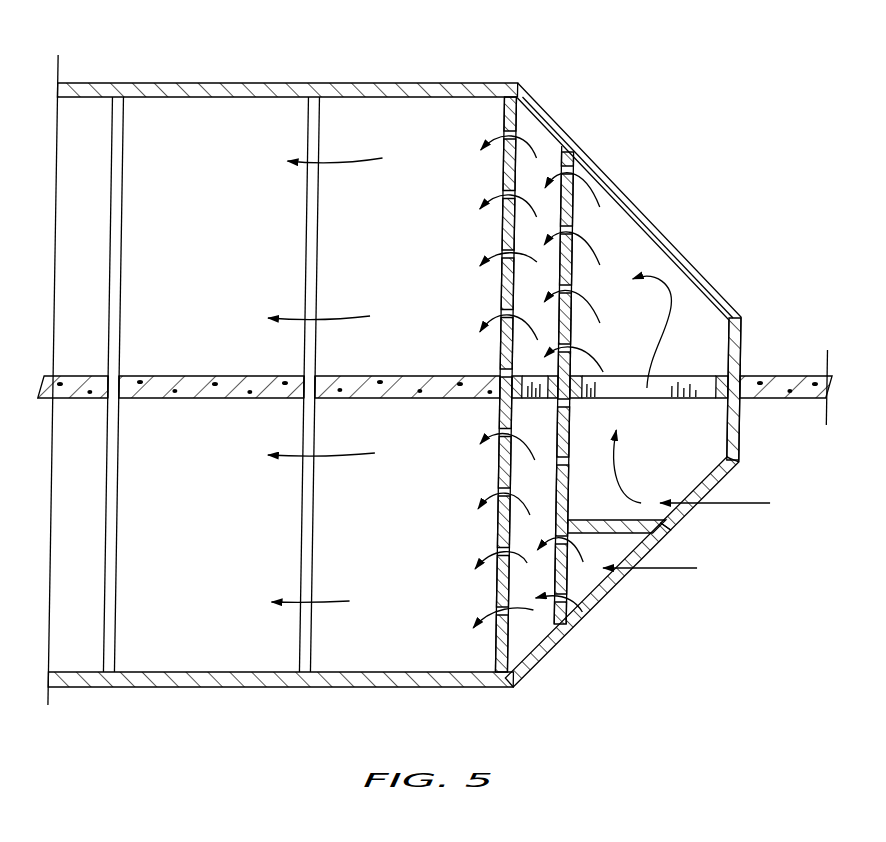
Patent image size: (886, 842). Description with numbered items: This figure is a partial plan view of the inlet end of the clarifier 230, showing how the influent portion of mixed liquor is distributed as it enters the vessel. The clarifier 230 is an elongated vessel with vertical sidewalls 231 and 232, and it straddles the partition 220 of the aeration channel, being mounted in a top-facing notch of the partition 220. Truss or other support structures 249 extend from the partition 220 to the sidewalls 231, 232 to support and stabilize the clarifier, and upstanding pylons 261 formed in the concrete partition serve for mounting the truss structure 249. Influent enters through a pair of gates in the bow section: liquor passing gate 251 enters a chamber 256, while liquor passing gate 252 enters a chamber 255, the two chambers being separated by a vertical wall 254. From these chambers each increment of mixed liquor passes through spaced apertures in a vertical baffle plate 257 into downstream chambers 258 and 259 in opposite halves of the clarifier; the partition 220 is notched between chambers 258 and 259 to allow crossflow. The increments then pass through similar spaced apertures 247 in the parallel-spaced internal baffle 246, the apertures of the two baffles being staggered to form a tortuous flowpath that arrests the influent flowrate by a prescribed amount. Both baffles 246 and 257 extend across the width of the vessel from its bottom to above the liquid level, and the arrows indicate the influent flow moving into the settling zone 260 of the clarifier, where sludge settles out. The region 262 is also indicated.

The partition 220 is at (782, 377).
The clarifier 230 is at (616, 181).
The vertical sidewall 231 is at (245, 83).
The vertical sidewall 232 is at (233, 677).
The internal baffle 246 is at (500, 128).
The spaced apertures 247 is at (500, 163).
The truss support structure 249 is at (122, 138).
The gate 251 is at (612, 589).
The gate 252 is at (681, 521).
The vertical wall 254 is at (637, 545).
The chamber 255 is at (686, 449).
The chamber 256 is at (586, 573).
The vertical baffle plate 257 is at (572, 223).
The downstream chamber 258 is at (534, 630).
The downstream chamber 259 is at (542, 142).
The settling zone 260 is at (221, 221).
The upstanding pylons 261 is at (118, 382).
The concrete floor slab 262 is at (193, 391).